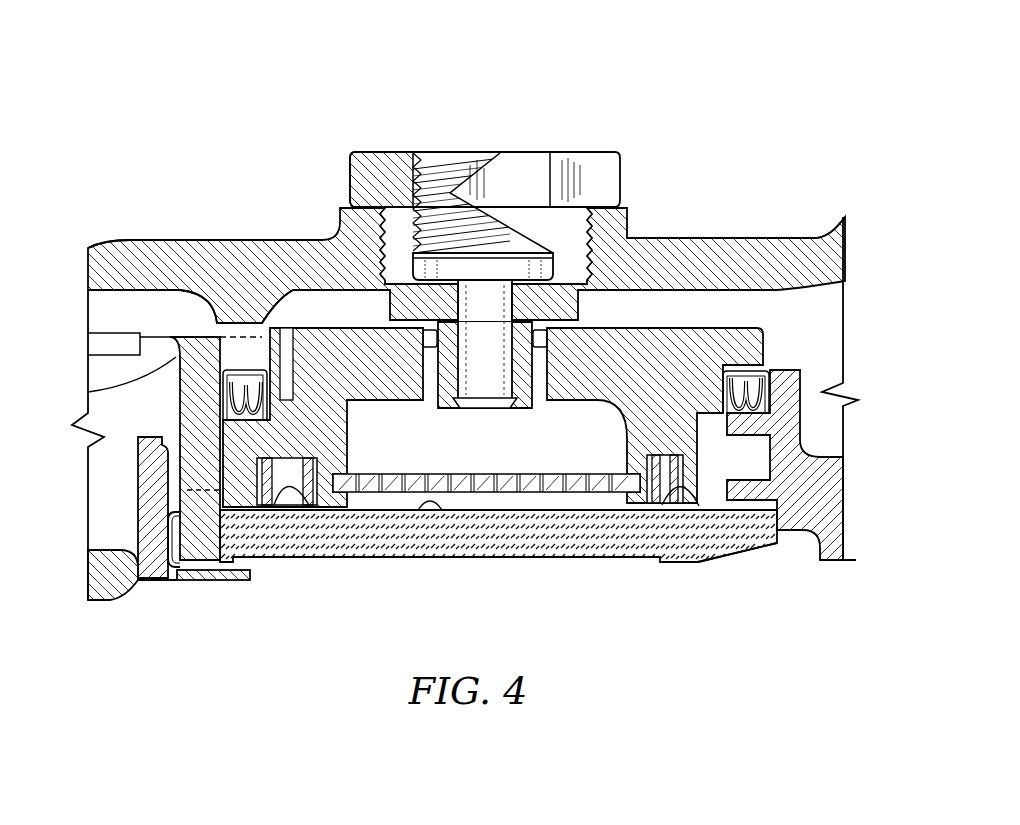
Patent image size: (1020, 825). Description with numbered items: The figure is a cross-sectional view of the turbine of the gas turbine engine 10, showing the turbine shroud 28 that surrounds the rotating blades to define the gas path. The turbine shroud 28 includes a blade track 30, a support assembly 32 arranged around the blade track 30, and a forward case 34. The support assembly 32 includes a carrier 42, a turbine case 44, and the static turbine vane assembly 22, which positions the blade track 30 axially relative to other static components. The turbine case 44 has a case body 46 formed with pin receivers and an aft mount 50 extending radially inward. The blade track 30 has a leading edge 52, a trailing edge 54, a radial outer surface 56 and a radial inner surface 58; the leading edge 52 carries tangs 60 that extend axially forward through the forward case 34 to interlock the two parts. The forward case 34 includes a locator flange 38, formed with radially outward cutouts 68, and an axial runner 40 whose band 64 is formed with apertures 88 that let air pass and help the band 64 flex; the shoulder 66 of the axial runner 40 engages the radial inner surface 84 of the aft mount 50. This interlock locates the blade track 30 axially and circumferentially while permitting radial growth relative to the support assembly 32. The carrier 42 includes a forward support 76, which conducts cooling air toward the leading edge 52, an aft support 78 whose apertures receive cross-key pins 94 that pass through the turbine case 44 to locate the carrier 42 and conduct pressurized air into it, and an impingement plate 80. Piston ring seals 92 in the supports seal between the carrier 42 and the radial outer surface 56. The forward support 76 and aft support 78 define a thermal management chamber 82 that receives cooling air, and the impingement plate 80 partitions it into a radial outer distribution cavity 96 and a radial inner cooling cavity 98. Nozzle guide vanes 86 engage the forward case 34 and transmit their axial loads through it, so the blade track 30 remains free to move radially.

The gas turbine engine 10 is at (810, 93).
The turbine vane assembly 22 is at (820, 450).
The turbine shroud 28 is at (712, 320).
The blade track 30 is at (633, 562).
The support assembly 32 is at (643, 226).
The forward case 34 is at (148, 325).
The locator flange 38 is at (176, 426).
The axial runner 40 is at (180, 325).
The carrier 42 is at (662, 320).
The turbine case 44 is at (818, 232).
The case body 46 is at (122, 250).
The aft mount 50 is at (252, 297).
The leading edge 52 is at (238, 575).
The trailing edge 54 is at (767, 559).
The radial outer surface 56 is at (423, 512).
The radial inner surface 58 is at (557, 560).
The tangs 60 is at (177, 573).
The band 64 is at (88, 393).
The shoulder 66 is at (232, 327).
The cutouts 68 is at (203, 492).
The forward support 76 is at (316, 445).
The aft support 78 is at (738, 349).
The impingement plate 80 is at (553, 472).
The thermal management chamber 82 is at (484, 445).
The radial inner surface 84 is at (267, 327).
The nozzle guide vanes 86 is at (103, 546).
The apertures 88 is at (115, 378).
The piston ring seals 92 is at (286, 505).
The cross-key pins 94 is at (607, 172).
The radial outer distribution cavity 96 is at (497, 449).
The radial inner cooling cavity 98 is at (537, 497).